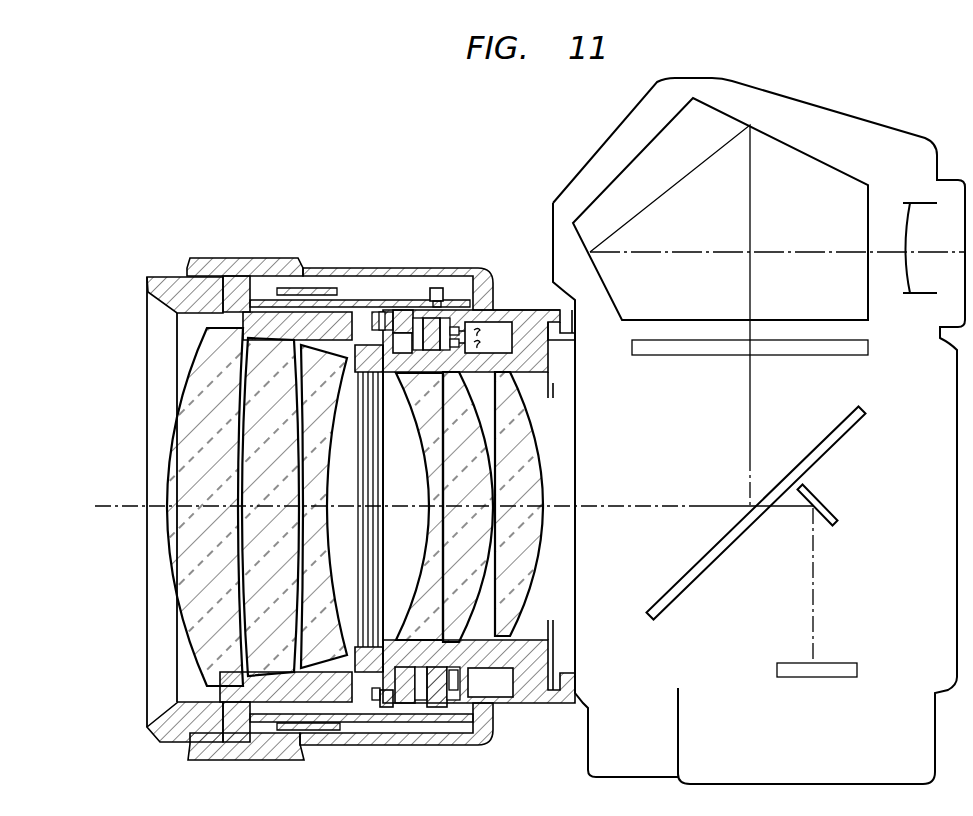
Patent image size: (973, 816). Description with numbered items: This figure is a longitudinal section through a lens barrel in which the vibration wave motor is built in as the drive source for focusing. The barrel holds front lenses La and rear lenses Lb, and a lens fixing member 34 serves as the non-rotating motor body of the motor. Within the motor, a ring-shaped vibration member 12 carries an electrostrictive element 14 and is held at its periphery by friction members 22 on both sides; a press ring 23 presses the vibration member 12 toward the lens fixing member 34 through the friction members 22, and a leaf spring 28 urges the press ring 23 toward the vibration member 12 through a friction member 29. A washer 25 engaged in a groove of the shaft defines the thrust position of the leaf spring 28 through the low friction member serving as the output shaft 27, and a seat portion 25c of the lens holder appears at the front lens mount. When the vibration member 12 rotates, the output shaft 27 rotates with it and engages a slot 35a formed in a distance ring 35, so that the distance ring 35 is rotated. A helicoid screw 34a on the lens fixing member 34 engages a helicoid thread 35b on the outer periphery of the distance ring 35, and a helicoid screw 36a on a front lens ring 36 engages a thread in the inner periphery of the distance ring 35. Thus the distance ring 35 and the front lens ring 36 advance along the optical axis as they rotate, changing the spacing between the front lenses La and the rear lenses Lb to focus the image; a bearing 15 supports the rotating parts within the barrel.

The front lens ring 36 is at (162, 277).
The distance ring 35 is at (230, 258).
The slot 35a is at (462, 297).
The helicoid thread 35b is at (287, 280).
The helicoid screw 36a is at (312, 297).
The helicoid screw 34a is at (318, 300).
The lens fixing member 34 is at (522, 327).
The bearing 15 is at (373, 312).
The press ring 23 is at (403, 310).
The output shaft 27 is at (436, 288).
The lens holder seat 25c is at (243, 348).
The washer 25 is at (363, 715).
The electrostrictive element 14 is at (398, 354).
The leaf spring 28 is at (387, 705).
The friction member 29 is at (397, 700).
The vibration member 12 is at (440, 700).
The friction members 22 is at (457, 700).
The front lenses La is at (197, 443).
The rear lenses Lb is at (525, 552).